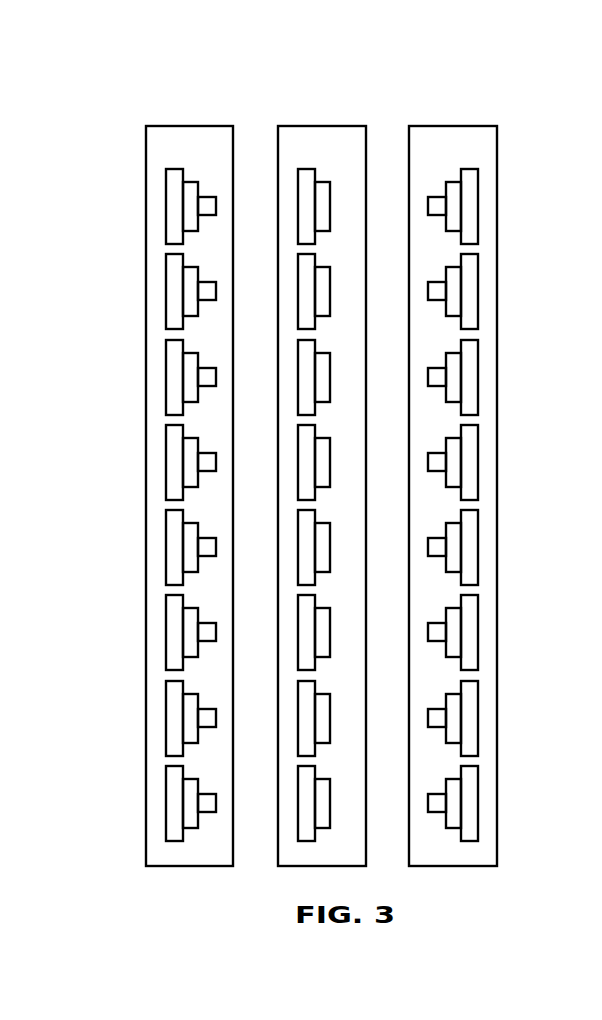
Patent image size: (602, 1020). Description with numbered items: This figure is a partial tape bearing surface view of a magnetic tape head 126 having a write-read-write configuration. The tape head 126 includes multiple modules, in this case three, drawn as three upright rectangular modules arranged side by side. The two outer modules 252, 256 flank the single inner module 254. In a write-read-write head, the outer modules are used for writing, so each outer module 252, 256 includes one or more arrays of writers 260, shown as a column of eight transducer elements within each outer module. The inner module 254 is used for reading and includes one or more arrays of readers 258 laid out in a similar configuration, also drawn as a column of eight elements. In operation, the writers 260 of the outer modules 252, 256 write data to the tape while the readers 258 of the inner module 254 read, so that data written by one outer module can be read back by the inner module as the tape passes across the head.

The tape head 126 is at (315, 443).
The outer module 252 is at (181, 92).
The inner module 254 is at (431, 455).
The outer module 256 is at (495, 455).
The reader 258 is at (441, 375).
The writer 260 is at (478, 459).